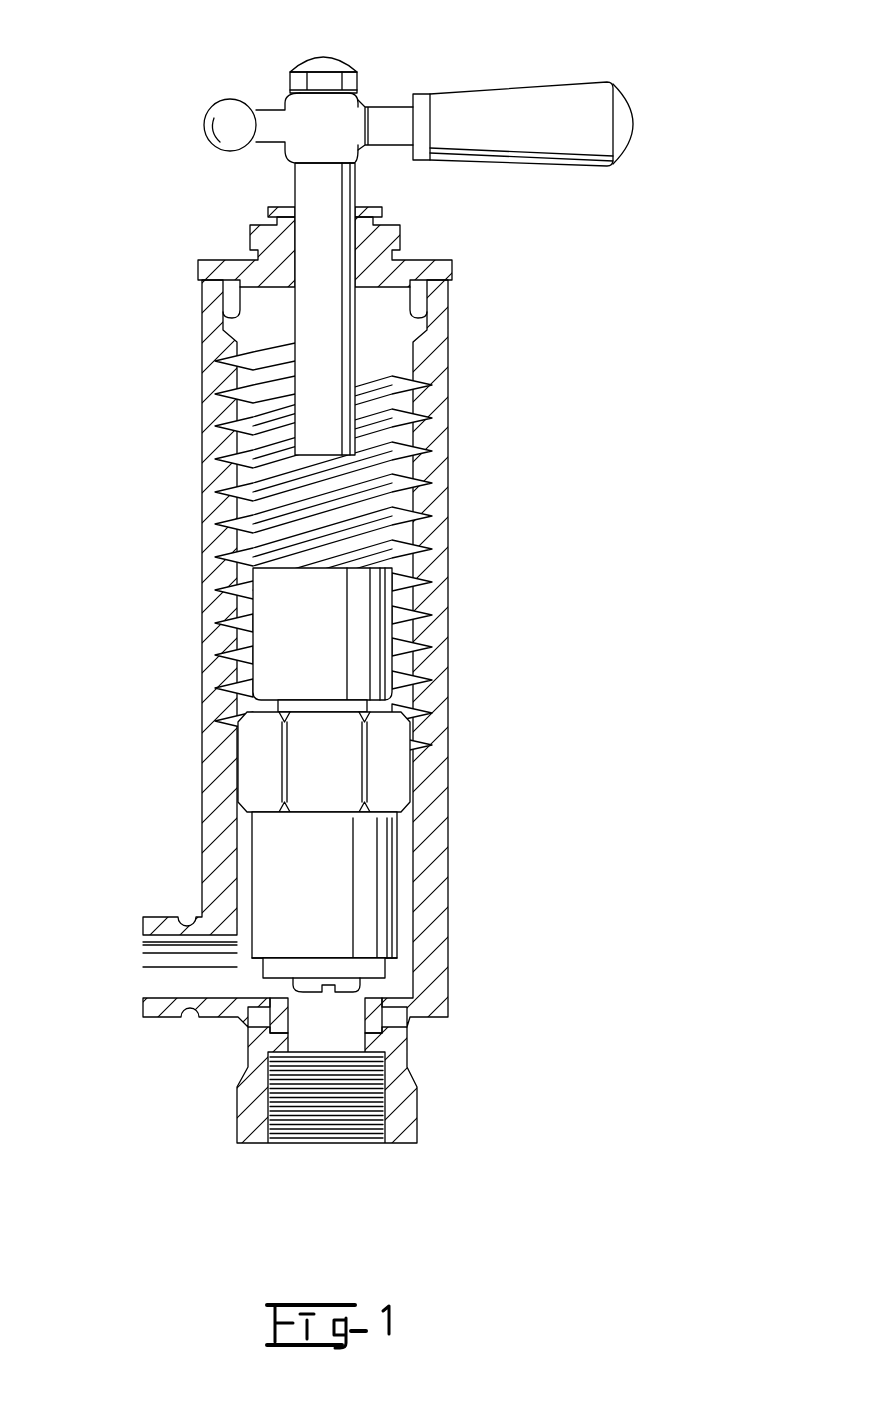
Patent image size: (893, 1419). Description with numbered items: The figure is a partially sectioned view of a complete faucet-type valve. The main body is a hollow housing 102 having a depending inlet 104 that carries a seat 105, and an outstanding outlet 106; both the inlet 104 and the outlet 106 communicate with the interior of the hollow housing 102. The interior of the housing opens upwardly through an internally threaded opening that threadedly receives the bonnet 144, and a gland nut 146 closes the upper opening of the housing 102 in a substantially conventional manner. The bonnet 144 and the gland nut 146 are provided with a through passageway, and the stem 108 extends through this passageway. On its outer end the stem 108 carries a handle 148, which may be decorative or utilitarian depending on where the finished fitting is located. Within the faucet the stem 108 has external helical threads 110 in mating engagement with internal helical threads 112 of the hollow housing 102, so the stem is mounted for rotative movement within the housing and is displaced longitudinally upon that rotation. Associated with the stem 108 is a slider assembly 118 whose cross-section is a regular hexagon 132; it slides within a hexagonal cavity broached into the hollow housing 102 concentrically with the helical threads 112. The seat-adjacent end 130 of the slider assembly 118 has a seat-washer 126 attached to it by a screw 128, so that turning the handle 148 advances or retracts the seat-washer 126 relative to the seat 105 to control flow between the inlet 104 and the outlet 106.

The hollow housing 102 is at (447, 340).
The depending inlet 104 is at (316, 1148).
The seat 105 is at (370, 1015).
The outstanding outlet 106 is at (143, 970).
The stem 108 is at (322, 347).
The external helical threads 110 is at (445, 473).
The internal helical threads 112 is at (443, 405).
The slider assembly 118 is at (312, 870).
The seat-washer 126 is at (368, 968).
The screw 128 is at (358, 983).
The seat-adjacent end 130 is at (316, 956).
The regular hexagon 132 is at (347, 763).
The bonnet 144 is at (450, 267).
The gland nut 146 is at (268, 212).
The handle 148 is at (563, 105).